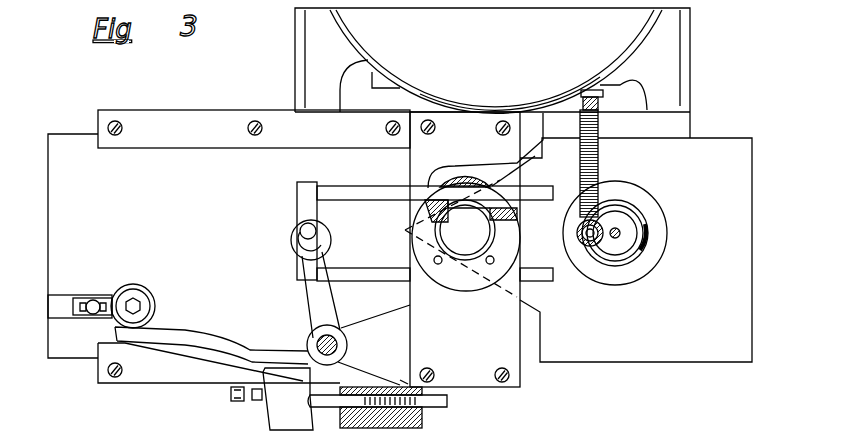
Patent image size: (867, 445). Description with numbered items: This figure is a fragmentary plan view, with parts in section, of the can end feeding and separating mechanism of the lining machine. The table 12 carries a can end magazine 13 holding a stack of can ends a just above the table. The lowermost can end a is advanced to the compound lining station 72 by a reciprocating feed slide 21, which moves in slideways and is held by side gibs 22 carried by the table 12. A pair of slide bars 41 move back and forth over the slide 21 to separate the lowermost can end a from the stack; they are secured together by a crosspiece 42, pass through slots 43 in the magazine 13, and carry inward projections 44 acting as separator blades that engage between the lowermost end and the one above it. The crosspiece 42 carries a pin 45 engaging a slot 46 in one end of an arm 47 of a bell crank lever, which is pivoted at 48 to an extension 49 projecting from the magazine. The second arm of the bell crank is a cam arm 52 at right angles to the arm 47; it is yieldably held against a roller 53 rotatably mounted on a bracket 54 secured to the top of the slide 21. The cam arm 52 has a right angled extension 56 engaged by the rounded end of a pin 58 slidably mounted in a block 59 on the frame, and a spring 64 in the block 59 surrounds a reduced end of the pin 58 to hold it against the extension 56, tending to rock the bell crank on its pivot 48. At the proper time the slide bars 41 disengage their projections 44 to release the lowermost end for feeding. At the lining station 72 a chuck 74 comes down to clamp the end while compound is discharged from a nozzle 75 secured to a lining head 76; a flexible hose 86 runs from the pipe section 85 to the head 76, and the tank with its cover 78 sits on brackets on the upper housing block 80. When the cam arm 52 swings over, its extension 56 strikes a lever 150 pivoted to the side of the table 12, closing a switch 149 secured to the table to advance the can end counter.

The table 12 is at (620, 347).
The can end magazine 13 is at (489, 265).
The reciprocating feed slide 21 is at (68, 148).
The side gibs 22 is at (181, 122).
The slide bars 41 is at (350, 193).
The crosspiece 42 is at (307, 196).
The slots 43 is at (461, 184).
The projections 44 is at (493, 186).
The pin 45 is at (303, 231).
The slot 46 is at (304, 246).
The arm 47 is at (313, 293).
The pivot 48 is at (336, 334).
The extension 49 is at (374, 345).
The cam arm 52 is at (183, 333).
The roller 53 is at (138, 284).
The bracket 54 is at (111, 295).
The right angled extension 56 is at (288, 399).
The pin 58 is at (330, 407).
The block 59 is at (422, 418).
The spring 64 is at (400, 380).
The compound lining station 72 is at (633, 216).
The chuck 74 is at (622, 234).
The discharge nozzle 75 is at (580, 239).
The lining head 76 is at (579, 228).
The cover 78 is at (492, 73).
The upper housing block 80 is at (605, 87).
The pipe section 85 is at (590, 88).
The flexible hose 86 is at (592, 158).
The switch 149 is at (255, 400).
The lever 150 is at (229, 394).
The can end a is at (480, 236).